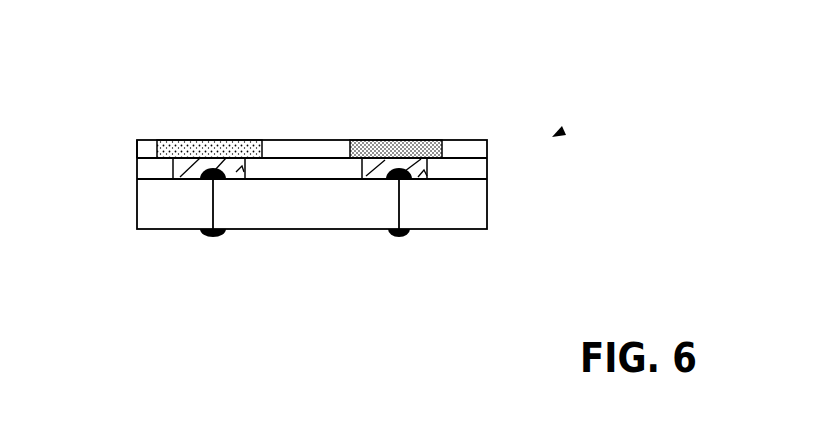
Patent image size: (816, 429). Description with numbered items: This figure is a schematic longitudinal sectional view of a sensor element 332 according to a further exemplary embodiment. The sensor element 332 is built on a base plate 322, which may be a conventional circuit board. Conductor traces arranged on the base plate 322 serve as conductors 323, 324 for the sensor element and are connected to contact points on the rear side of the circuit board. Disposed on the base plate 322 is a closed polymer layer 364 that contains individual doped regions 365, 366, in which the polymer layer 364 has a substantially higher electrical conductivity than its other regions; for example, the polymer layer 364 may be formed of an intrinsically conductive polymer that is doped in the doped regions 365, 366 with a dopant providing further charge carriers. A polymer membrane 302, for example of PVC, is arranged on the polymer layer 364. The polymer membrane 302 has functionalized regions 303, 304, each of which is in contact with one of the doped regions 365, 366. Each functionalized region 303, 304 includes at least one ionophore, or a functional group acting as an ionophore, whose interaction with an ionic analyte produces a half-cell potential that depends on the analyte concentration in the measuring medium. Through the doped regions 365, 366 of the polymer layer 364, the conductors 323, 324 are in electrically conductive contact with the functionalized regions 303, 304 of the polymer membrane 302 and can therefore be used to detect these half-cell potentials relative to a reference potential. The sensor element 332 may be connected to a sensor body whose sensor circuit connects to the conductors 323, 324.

The polymer membrane 302 is at (137, 142).
The functionalized region 303 is at (184, 146).
The functionalized region 304 is at (397, 165).
The base plate 322 is at (487, 205).
The conductor 323 is at (236, 178).
The conductor 324 is at (410, 183).
The sensor element 332 is at (560, 131).
The polymer layer 364 is at (148, 167).
The doped region 365 is at (240, 163).
The doped region 366 is at (373, 165).